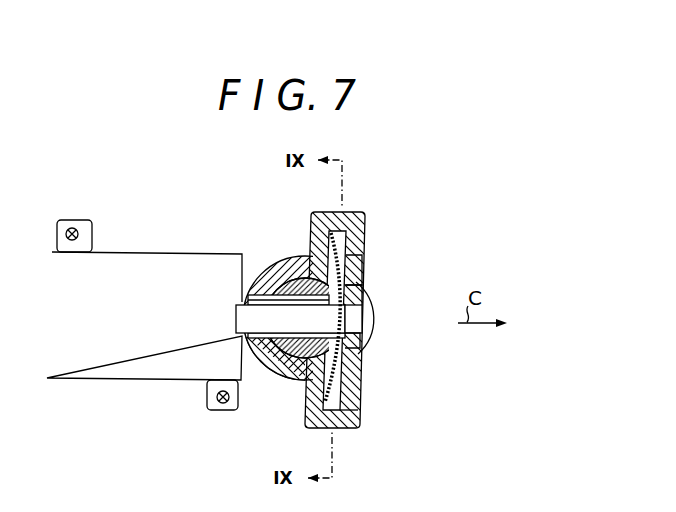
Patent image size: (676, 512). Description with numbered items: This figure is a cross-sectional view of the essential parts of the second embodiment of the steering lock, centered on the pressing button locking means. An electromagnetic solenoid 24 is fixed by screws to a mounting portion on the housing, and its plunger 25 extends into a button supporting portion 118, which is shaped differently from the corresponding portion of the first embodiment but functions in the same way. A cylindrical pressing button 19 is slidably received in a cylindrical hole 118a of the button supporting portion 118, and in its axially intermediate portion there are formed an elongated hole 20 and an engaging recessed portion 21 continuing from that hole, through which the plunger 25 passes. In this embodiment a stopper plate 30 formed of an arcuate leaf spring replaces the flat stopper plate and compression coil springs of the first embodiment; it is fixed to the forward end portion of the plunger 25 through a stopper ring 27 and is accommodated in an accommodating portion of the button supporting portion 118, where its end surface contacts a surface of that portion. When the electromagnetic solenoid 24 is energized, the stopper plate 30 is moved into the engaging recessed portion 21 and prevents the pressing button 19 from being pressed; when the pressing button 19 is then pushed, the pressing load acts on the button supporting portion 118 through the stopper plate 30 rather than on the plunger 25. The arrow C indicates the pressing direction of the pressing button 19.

The electromagnetic solenoid 24 is at (183, 262).
The button supporting portion 118 is at (313, 222).
The boss of bracket 118a is at (284, 266).
The elongated hole 20 is at (240, 325).
The pressing button 19 is at (360, 273).
The engaging recessed portion 21 is at (360, 286).
The plunger 25 is at (368, 318).
The stopper ring 27 is at (360, 344).
The stopper plate 30 is at (358, 399).